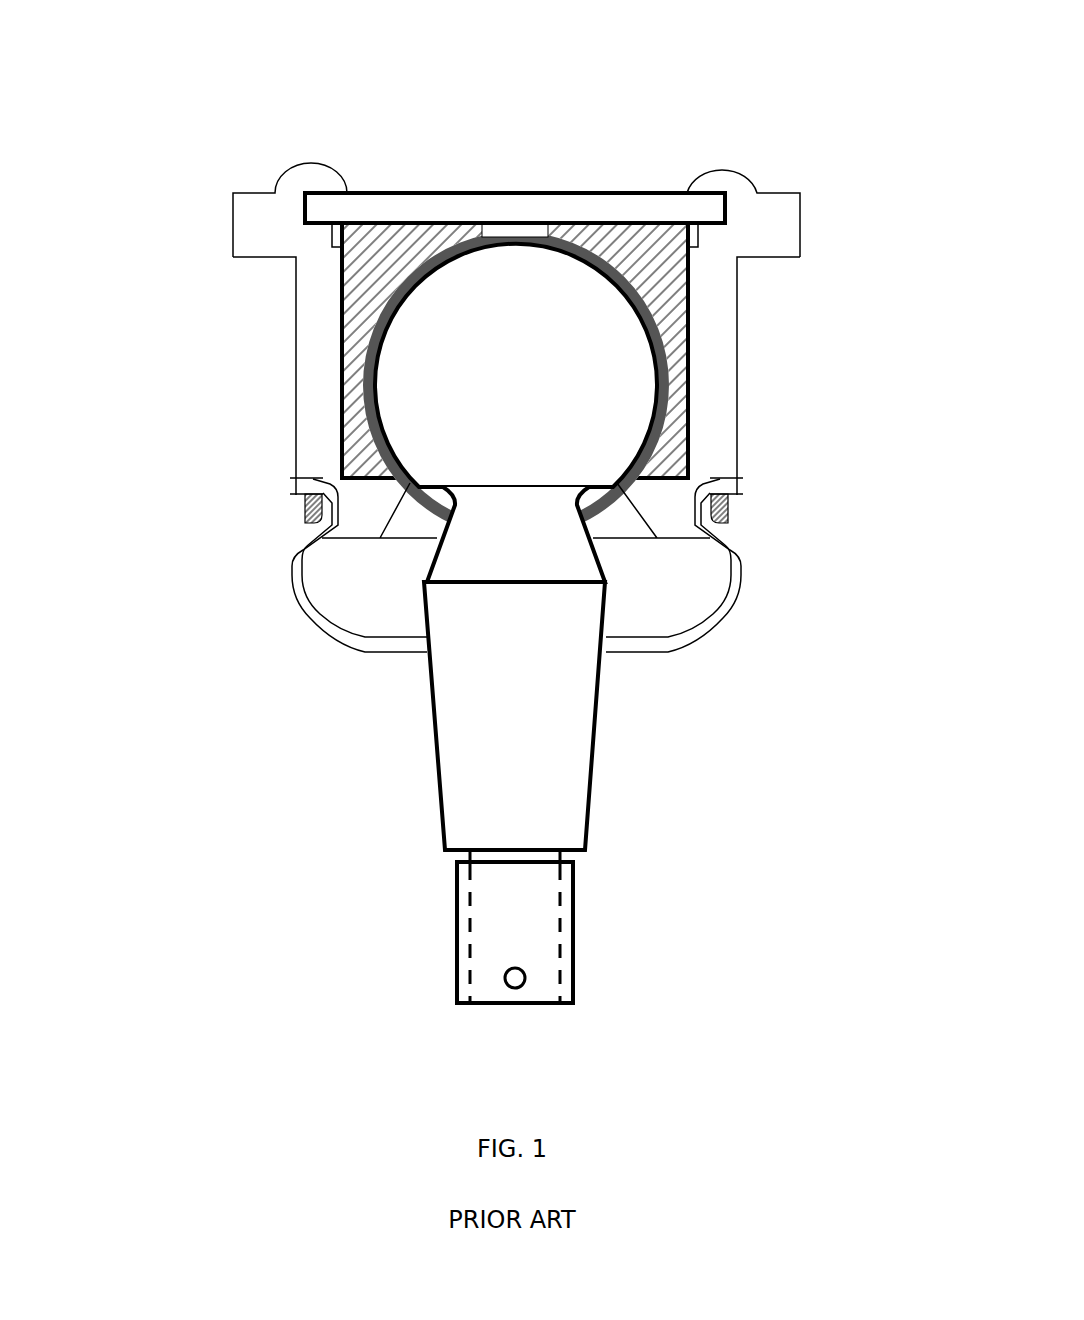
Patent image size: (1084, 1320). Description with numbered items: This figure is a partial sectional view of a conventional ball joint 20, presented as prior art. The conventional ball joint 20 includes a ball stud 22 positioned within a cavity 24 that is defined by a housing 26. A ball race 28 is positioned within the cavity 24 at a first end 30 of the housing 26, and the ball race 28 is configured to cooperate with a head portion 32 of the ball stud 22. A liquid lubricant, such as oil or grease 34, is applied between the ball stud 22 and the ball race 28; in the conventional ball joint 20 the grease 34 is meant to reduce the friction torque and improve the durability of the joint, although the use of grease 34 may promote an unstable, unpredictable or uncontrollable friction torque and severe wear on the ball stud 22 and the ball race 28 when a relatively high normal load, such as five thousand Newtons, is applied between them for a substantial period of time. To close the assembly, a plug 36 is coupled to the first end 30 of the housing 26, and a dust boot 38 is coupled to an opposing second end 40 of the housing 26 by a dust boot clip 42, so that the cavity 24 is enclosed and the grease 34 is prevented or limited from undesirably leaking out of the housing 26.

The conventional ball joint 20 is at (503, 506).
The ball stud 22 is at (611, 697).
The cavity 24 is at (660, 283).
The housing 26 is at (310, 357).
The ball race 28 is at (602, 240).
The first end 30 is at (260, 170).
The head portion 32 is at (480, 292).
The grease 34 is at (663, 410).
The plug 36 is at (335, 208).
The dust boot 38 is at (287, 583).
The second end 40 is at (273, 482).
The dust boot clip 42 is at (308, 509).